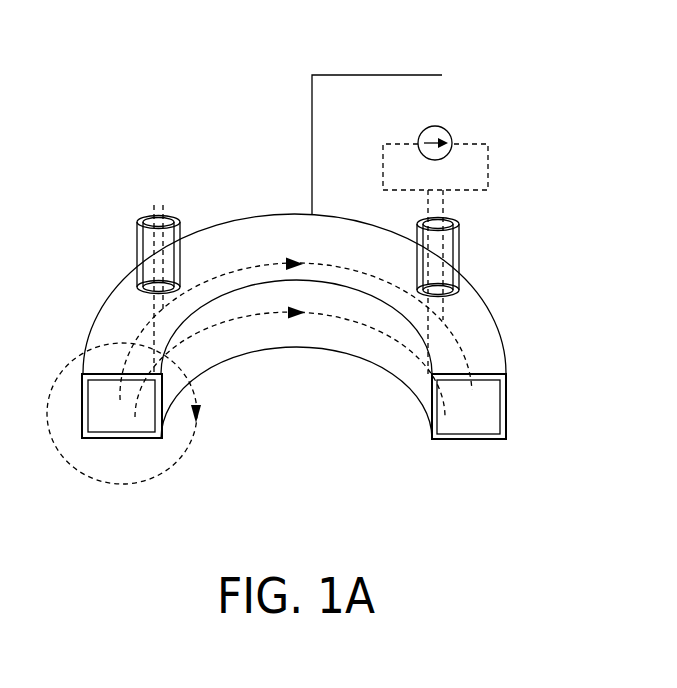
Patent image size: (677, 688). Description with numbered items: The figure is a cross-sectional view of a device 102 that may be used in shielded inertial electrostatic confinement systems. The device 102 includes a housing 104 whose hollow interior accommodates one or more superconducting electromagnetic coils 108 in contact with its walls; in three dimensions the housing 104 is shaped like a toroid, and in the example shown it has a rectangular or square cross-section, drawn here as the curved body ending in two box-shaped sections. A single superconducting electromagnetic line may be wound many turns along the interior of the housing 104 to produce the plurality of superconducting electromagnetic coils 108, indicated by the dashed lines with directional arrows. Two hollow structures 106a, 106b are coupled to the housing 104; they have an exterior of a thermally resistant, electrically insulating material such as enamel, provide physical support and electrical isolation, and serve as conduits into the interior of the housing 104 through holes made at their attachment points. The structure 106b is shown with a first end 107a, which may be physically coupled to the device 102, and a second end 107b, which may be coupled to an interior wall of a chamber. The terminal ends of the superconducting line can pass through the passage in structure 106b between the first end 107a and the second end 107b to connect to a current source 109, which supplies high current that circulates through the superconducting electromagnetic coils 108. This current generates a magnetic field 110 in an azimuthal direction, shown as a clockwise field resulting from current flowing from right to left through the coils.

The device 102 is at (576, 51).
The housing 104 is at (506, 363).
The structure 106a is at (138, 242).
The structure 106b is at (495, 282).
The first end 107a is at (458, 222).
The second end 107b is at (460, 292).
The superconducting electromagnetic coils 108 is at (277, 262).
The current source 109 is at (445, 128).
The magnetic field 110 is at (168, 463).